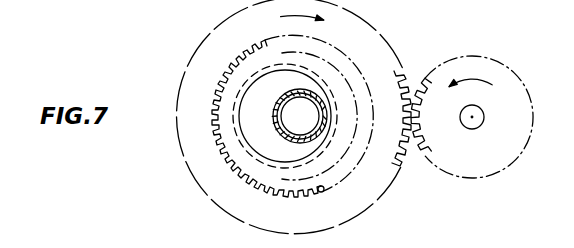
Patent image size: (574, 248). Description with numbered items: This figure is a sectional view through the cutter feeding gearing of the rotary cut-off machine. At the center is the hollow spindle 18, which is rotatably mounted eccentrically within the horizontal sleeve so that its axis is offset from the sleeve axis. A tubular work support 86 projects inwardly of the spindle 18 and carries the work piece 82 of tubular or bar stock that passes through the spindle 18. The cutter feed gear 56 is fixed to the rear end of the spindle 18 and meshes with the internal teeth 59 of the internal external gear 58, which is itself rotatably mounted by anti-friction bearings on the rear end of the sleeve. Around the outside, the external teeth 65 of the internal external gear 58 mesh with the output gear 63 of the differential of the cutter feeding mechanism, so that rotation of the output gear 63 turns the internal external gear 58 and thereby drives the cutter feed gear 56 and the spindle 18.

The hollow spindle 18 is at (279, 68).
The cutter feed gear 56 is at (241, 156).
The internal external gear 58 is at (220, 186).
The internal teeth 59 is at (323, 191).
The output gear 63 is at (470, 167).
The external teeth 65 is at (397, 166).
The work piece 82 is at (322, 114).
The tubular work support 86 is at (275, 123).